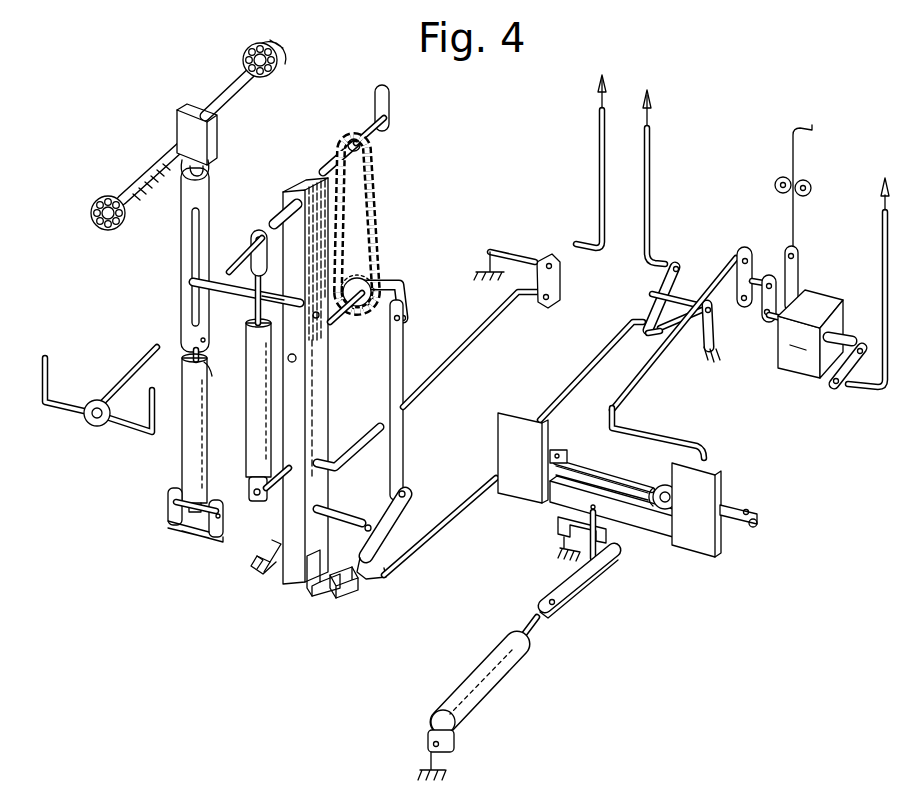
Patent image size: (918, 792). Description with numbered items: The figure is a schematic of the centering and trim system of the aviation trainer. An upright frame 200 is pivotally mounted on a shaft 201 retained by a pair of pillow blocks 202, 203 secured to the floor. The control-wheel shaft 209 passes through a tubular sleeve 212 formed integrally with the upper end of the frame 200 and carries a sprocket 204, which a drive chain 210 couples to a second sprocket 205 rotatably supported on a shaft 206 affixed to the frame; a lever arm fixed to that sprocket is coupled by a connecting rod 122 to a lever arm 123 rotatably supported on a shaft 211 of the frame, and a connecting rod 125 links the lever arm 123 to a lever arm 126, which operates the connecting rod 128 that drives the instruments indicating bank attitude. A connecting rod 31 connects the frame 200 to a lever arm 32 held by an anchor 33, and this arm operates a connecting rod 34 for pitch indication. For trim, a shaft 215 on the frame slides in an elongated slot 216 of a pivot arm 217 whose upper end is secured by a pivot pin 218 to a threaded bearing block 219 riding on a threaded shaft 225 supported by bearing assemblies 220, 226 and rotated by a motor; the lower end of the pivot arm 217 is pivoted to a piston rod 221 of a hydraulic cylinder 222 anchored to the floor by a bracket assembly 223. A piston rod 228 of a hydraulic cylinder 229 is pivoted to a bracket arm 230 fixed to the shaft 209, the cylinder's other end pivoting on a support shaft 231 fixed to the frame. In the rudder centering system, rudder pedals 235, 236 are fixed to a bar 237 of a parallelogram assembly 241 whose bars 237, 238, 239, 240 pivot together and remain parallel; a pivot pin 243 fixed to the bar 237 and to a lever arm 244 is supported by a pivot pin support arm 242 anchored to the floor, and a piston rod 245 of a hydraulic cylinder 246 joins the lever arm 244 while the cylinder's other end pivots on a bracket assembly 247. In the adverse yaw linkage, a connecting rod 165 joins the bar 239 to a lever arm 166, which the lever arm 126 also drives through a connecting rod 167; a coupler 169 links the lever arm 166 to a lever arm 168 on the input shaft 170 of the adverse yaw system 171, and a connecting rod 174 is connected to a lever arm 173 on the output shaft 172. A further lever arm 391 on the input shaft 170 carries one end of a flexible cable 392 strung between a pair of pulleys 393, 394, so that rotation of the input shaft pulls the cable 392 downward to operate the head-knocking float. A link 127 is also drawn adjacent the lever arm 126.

The upright frame 200 is at (318, 412).
The shaft 201 is at (312, 585).
The pillow block 202 is at (338, 598).
The pillow block 203 is at (258, 572).
The sprocket 204 is at (372, 158).
The sprocket 205 is at (372, 266).
The shaft 206 is at (350, 310).
The shaft 209 is at (128, 368).
The drive chain 210 is at (378, 198).
The shaft 211 is at (345, 514).
The tubular sleeve 212 is at (286, 192).
The shaft 215 is at (208, 345).
The elongated slot 216 is at (193, 243).
The pivot arm 217 is at (186, 283).
The pivot pin 218 is at (210, 180).
The threaded bearing block 219 is at (182, 108).
The bearing assembly 220 is at (282, 46).
The piston rod 221 is at (406, 302).
The hydraulic cylinder 222 is at (184, 448).
The bracket assembly 223 is at (168, 515).
The threaded shaft 225 is at (235, 88).
The bearing assembly 226 is at (104, 196).
The piston rod 228 is at (282, 293).
The hydraulic cylinder 229 is at (248, 440).
The bracket arm 230 is at (248, 236).
The support shaft 231 is at (260, 504).
The connecting rod 31 is at (470, 346).
The lever arm 32 is at (544, 282).
The anchor 33 is at (516, 248).
The connecting rod 34 is at (598, 168).
The connecting rod 122 is at (404, 456).
The lever arm 123 is at (384, 510).
The connecting rod 125 is at (414, 548).
The lever arm 126 is at (643, 308).
The pivot link 127 is at (700, 350).
The connecting rod 128 is at (651, 188).
The connecting rod 165 is at (660, 432).
The lever arm 166 is at (750, 252).
The connecting rod 167 is at (698, 268).
The lever arm 168 is at (775, 322).
The coupler 169 is at (764, 316).
The input shaft 170 is at (806, 362).
The adverse yaw system 171 is at (808, 372).
The output shaft 172 is at (850, 338).
The lever arm 173 is at (830, 392).
The connecting rod 174 is at (882, 284).
The lever arm 391 is at (800, 264).
The flexible cable 392 is at (796, 220).
The pulley 393 is at (774, 184).
The pulley 394 is at (812, 190).
The rudder pedal 235 is at (526, 488).
The rudder pedal 236 is at (700, 555).
The bar 237 is at (640, 528).
The bar 238 is at (758, 535).
The bar 239 is at (584, 472).
The bar 240 is at (560, 450).
The parallelogram assembly 241 is at (612, 486).
The pivot pin support arm 242 is at (560, 537).
The pivot pin 243 is at (598, 548).
The lever arm 244 is at (578, 600).
The piston rod 245 is at (548, 628).
The hydraulic cylinder 246 is at (505, 680).
The bracket assembly 247 is at (456, 736).